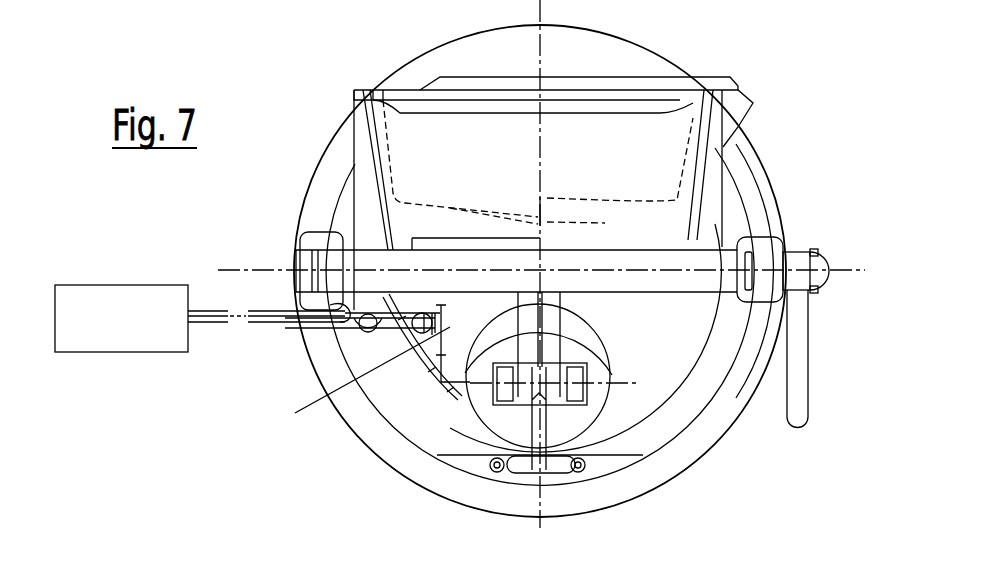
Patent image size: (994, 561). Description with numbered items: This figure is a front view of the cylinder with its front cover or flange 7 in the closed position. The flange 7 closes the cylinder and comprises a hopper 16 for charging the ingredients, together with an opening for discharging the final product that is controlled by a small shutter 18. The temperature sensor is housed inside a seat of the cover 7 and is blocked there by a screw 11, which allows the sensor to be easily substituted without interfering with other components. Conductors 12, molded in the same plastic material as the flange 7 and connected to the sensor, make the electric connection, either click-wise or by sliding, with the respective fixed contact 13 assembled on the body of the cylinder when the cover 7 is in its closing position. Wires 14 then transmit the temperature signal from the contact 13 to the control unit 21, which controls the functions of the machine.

The front cover or flange 7 is at (707, 211).
The screw 11 is at (465, 390).
The conductors 12 is at (395, 333).
The fixed contact 13 is at (340, 330).
The wires 14 is at (280, 327).
The hopper 16 is at (635, 145).
The small shutter 18 is at (580, 355).
The control unit 21 is at (125, 353).